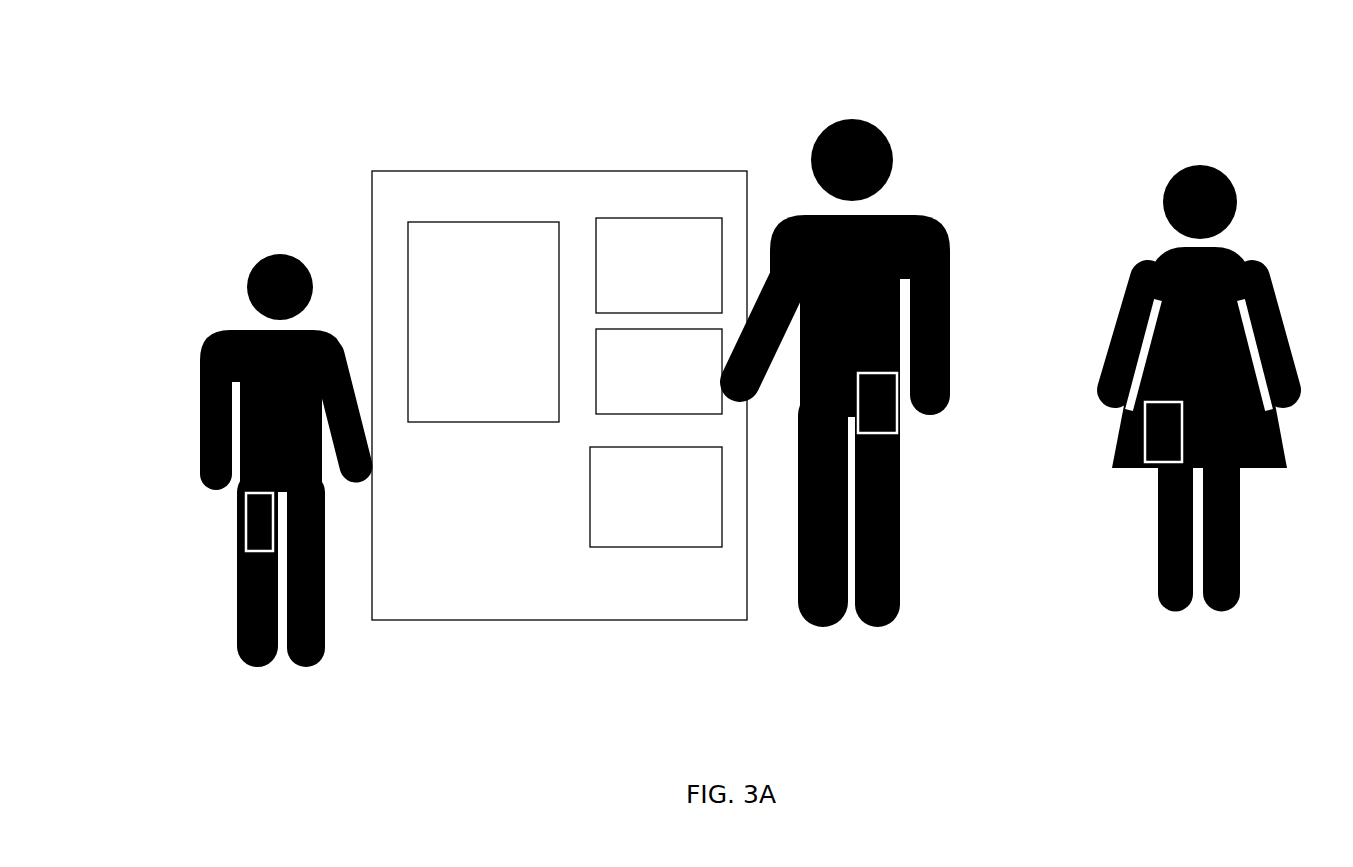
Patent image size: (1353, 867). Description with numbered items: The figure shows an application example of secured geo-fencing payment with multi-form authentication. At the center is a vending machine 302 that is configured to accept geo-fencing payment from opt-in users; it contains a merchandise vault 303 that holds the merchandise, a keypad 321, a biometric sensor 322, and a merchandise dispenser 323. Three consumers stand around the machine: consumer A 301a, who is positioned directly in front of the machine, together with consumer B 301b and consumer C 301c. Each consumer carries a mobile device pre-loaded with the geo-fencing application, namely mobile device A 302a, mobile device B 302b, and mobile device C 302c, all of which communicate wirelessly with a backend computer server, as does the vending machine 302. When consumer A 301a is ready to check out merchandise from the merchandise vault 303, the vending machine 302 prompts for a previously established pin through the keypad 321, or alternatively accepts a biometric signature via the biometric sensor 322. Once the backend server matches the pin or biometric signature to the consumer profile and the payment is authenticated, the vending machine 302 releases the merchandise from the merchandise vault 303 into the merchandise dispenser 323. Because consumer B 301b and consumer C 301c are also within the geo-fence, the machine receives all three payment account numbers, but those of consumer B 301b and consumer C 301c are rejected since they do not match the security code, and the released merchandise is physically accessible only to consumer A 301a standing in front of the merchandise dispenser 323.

The consumer A 301a is at (901, 104).
The consumer B 301b is at (1226, 132).
The consumer C 301c is at (278, 229).
The vending machine 302 is at (461, 542).
The mobile device A 302a is at (914, 453).
The mobile device B 302b is at (1134, 484).
The mobile device C 302c is at (231, 538).
The merchandise vault 303 is at (466, 356).
The keypad 321 is at (642, 392).
The biometric sensor 322 is at (642, 299).
The merchandise dispenser 323 is at (639, 531).